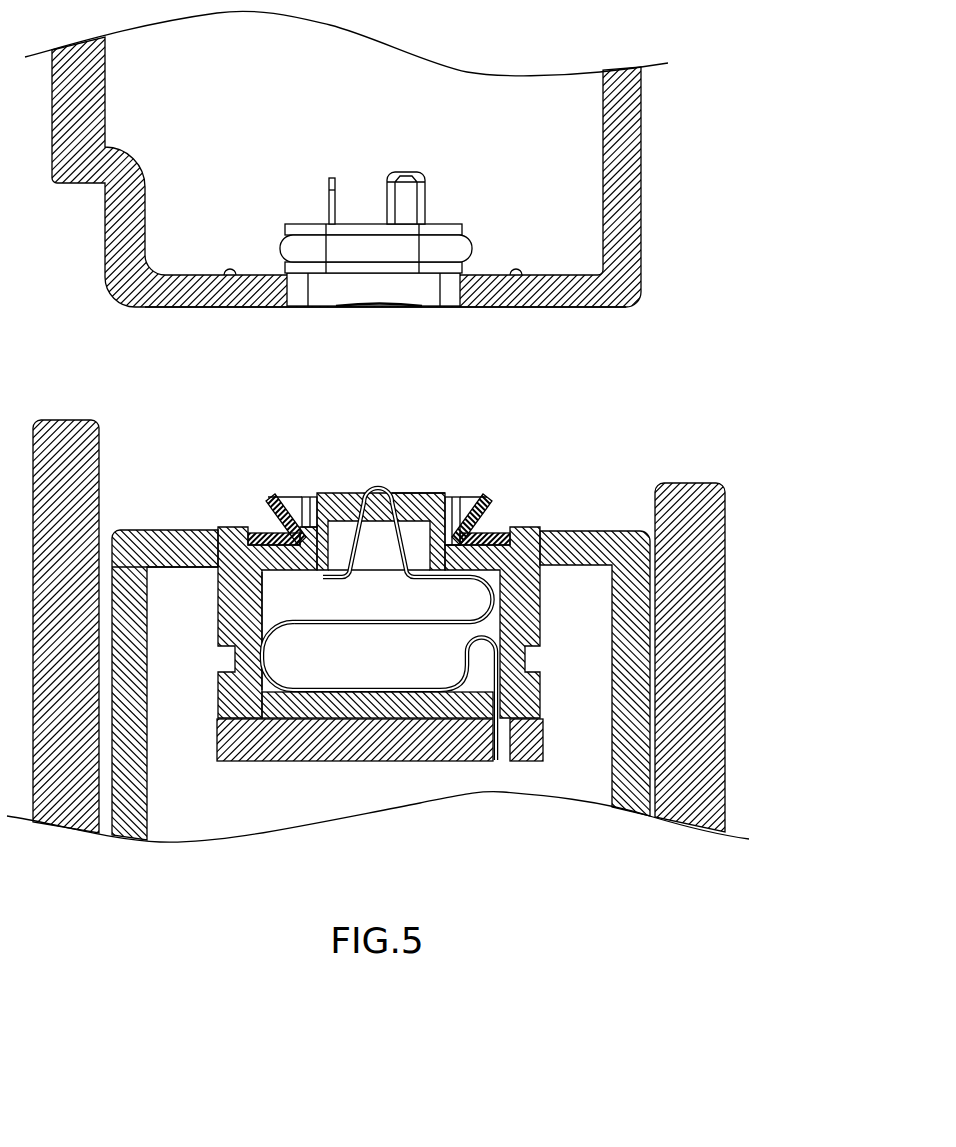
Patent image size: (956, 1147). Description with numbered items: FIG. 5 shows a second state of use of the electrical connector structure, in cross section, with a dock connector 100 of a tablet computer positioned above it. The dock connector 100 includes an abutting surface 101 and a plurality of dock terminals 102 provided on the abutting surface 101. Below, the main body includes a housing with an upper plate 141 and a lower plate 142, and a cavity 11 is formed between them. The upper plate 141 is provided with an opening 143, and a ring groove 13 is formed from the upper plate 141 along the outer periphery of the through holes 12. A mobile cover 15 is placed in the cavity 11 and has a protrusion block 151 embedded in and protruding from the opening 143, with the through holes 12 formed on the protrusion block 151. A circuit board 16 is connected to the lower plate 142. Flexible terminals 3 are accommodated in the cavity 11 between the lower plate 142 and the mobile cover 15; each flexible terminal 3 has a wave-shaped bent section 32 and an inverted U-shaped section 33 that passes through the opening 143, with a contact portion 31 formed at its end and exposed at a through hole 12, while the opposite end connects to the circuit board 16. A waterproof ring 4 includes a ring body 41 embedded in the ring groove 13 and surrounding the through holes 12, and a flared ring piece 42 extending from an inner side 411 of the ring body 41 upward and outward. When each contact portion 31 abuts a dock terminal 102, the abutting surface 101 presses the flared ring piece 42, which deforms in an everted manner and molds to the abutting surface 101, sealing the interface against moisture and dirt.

The dock connector 100 is at (652, 225).
The abutting surface 101 is at (537, 310).
The dock terminals 102 is at (380, 308).
The waterproof ring 4 is at (478, 573).
The ring body 41 is at (268, 497).
The flared ring piece 42 is at (264, 537).
The cavity 11 is at (275, 602).
The inner side 411 is at (299, 631).
The through holes 12 is at (385, 500).
The mobile cover 15 is at (438, 484).
The protrusion block 151 is at (417, 493).
The ring groove 13 is at (507, 533).
The opening 143 is at (441, 545).
The upper plate 141 is at (528, 530).
The lower plate 142 is at (302, 743).
The circuit board 16 is at (422, 762).
The flexible terminals 3 is at (433, 576).
The contact portion 31 is at (377, 478).
The wave-shaped bent section 32 is at (492, 589).
The inverted U-shaped section 33 is at (353, 560).